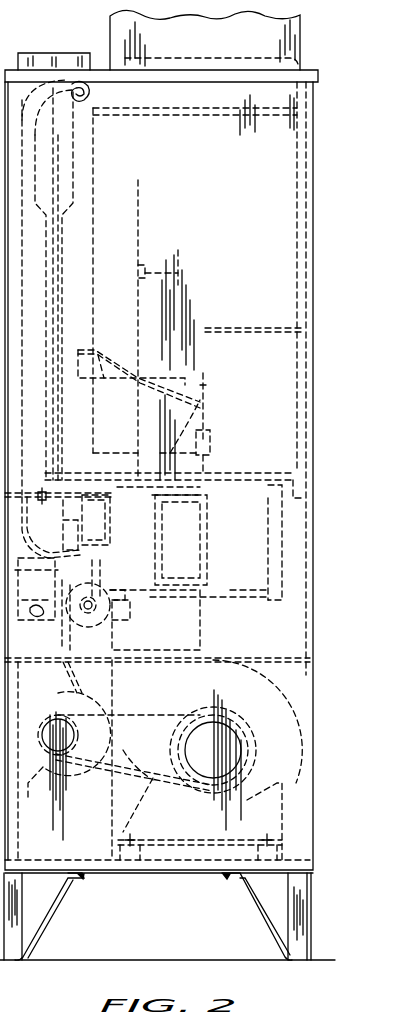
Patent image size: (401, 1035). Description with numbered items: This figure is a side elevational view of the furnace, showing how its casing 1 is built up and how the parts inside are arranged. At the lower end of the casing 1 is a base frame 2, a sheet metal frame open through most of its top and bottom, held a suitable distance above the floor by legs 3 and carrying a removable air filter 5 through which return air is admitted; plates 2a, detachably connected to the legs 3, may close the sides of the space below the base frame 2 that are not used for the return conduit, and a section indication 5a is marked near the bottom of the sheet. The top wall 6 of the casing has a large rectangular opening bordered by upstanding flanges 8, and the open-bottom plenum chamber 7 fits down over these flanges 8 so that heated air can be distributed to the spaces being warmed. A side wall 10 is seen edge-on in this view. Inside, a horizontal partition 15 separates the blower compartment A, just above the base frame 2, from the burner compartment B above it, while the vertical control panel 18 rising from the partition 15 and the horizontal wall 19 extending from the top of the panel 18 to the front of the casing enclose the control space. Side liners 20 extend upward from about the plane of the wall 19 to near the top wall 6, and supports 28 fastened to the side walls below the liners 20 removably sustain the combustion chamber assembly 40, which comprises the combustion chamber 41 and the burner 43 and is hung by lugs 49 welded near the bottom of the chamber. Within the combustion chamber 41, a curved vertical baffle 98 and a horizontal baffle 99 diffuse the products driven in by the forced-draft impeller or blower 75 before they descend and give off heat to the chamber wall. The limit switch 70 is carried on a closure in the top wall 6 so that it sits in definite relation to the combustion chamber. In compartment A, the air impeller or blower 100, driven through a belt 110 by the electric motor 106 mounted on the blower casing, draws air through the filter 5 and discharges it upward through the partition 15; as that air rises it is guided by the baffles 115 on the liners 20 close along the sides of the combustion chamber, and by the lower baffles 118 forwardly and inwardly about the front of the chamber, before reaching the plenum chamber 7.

The casing 1 is at (318, 418).
The base frame 2 is at (96, 873).
The plates 2a is at (312, 930).
The legs 3 is at (13, 907).
The air filter 5 is at (13, 70).
The section line 5a is at (3, 968).
The top wall 6 is at (316, 72).
The plenum chamber 7 is at (238, 45).
The upstanding flanges 8 is at (186, 60).
The side wall 10 is at (290, 561).
The horizontal partition 15 is at (281, 648).
The control panel 18 is at (121, 634).
The horizontal wall 19 is at (60, 501).
The side liners 20 is at (287, 542).
The supports 28 is at (216, 545).
The combustion chamber assembly 40 is at (268, 188).
The combustion chamber 41 is at (192, 108).
The burner 43 is at (270, 585).
The lugs 49 is at (206, 440).
The limit switch 70 is at (96, 97).
The impeller or blower 75 is at (62, 580).
The baffle 98 is at (137, 338).
The baffle 99 is at (172, 240).
The air impeller or blower 100 is at (283, 750).
The electric motor 106 is at (64, 766).
The belt 110 is at (139, 714).
The baffles 115 is at (252, 328).
The baffles 118 is at (206, 375).
The blower compartment A is at (285, 692).
The burner compartment B is at (287, 552).